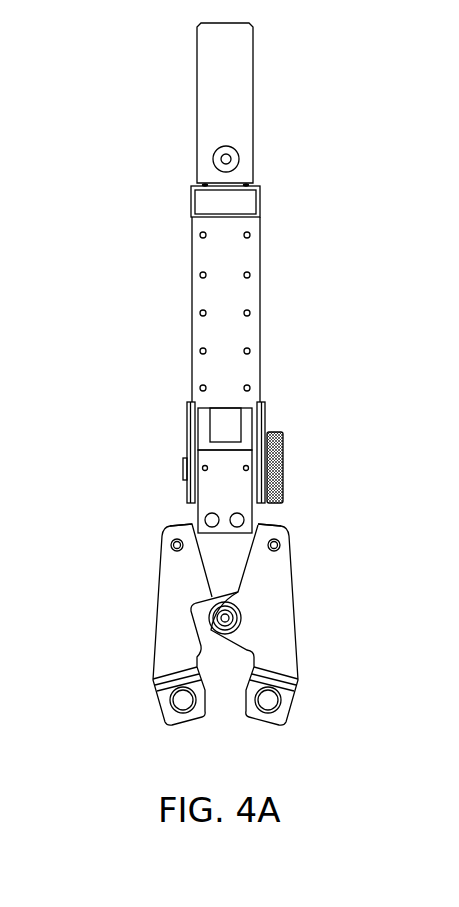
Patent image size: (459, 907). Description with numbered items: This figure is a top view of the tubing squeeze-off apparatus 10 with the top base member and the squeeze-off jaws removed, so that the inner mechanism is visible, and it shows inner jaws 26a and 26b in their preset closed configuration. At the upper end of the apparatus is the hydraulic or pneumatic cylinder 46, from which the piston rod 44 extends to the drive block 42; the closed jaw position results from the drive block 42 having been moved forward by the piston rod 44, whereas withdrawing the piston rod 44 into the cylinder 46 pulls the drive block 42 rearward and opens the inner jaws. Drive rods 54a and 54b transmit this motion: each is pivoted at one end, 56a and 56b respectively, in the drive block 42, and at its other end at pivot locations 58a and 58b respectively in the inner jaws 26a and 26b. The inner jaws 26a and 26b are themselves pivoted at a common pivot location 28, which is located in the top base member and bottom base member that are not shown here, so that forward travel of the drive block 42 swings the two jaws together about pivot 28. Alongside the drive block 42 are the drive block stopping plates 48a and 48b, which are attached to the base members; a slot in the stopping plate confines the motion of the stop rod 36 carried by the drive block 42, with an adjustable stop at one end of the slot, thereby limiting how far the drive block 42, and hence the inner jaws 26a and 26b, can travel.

The tubing squeeze-off apparatus 10 is at (281, 287).
The inner jaw 26a is at (165, 630).
The inner jaw 26b is at (268, 623).
The pivot location 28 is at (218, 622).
The stop rod 36 is at (183, 460).
The drive block 42 is at (238, 495).
The piston rod 44 is at (238, 441).
The hydraulic or pneumatic cylinder 46 is at (239, 298).
The drive block stopping plate 48a is at (186, 412).
The drive block stopping plate 48b is at (267, 412).
The drive rod 54a is at (189, 526).
The drive rod 54b is at (262, 529).
The pivot end 56a is at (206, 517).
The pivot end 56b is at (242, 516).
The pivot location 58a is at (170, 545).
The pivot location 58b is at (281, 543).